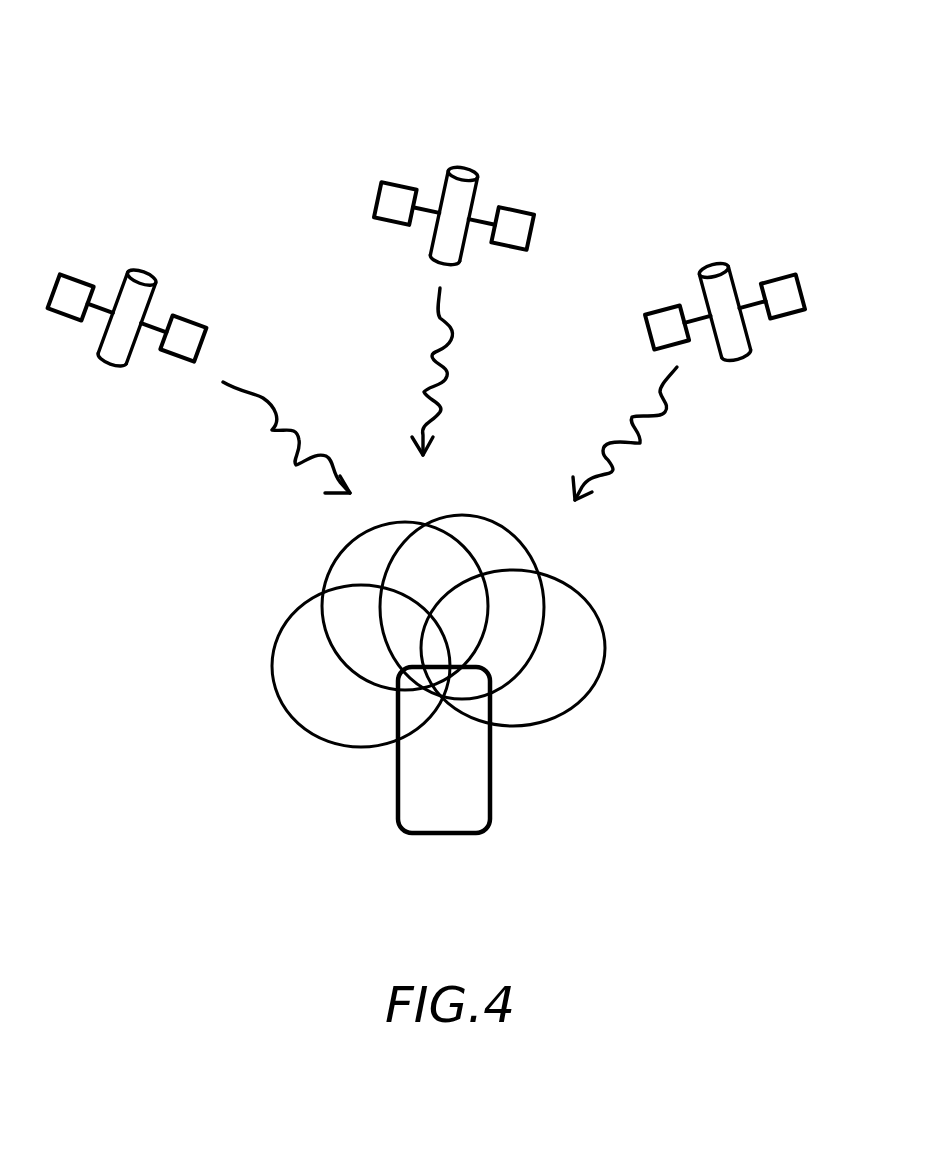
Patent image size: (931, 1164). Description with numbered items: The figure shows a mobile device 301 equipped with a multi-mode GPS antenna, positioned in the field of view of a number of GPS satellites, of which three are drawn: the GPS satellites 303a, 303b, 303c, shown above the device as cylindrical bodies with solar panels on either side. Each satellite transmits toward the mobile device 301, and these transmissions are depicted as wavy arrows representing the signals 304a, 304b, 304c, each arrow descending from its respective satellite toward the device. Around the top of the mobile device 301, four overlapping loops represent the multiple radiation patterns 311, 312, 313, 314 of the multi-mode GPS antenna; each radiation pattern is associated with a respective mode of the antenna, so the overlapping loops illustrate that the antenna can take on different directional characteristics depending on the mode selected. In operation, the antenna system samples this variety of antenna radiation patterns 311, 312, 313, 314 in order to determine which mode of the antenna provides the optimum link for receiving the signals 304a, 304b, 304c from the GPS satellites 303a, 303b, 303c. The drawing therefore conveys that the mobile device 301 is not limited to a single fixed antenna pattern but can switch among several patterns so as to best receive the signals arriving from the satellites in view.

The mobile device 301 is at (448, 837).
The GPS satellite 303a is at (146, 276).
The GPS satellite 303b is at (463, 168).
The GPS satellite 303c is at (708, 263).
The signal 304a is at (296, 465).
The signal 304b is at (424, 392).
The signal 304c is at (640, 443).
The radiation pattern 311 is at (302, 727).
The radiation pattern 312 is at (333, 553).
The radiation pattern 313 is at (484, 516).
The radiation pattern 314 is at (605, 645).